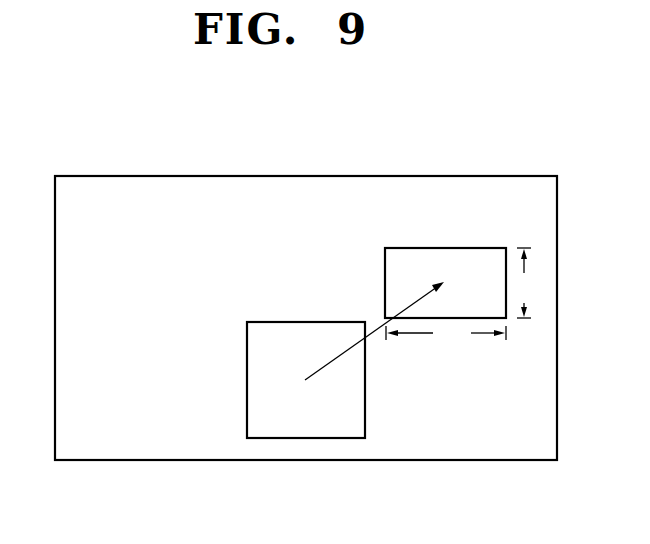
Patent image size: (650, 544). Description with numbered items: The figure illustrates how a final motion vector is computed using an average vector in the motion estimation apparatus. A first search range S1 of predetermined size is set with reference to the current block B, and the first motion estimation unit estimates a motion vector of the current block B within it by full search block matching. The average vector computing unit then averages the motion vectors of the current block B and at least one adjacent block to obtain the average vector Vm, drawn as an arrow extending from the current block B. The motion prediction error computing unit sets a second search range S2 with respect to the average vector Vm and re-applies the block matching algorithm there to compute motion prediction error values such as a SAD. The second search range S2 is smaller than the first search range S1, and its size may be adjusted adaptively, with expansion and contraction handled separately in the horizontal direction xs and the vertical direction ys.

The first search range S1 is at (306, 176).
The second search range S2 is at (444, 248).
The current block B is at (306, 322).
The average vector Vm is at (390, 326).
The vertical direction ys is at (521, 283).
The horizontal direction xs is at (446, 334).